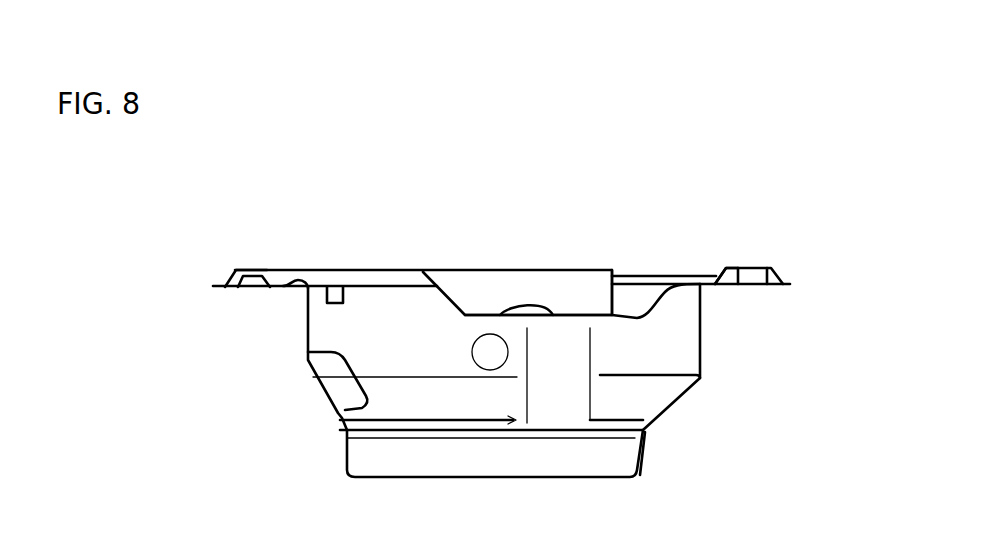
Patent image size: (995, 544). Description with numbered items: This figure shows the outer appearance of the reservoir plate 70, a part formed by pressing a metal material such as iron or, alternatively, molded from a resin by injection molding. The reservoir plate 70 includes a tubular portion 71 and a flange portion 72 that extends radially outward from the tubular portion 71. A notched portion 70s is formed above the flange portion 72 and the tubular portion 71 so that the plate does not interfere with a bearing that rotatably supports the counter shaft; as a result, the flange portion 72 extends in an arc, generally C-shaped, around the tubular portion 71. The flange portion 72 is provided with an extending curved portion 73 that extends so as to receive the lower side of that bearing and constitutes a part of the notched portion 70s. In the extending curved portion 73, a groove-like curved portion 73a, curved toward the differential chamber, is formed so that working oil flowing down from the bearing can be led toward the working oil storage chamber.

The reservoir plate 70 is at (373, 210).
The notched portion 70s is at (577, 298).
The tubular portion 71 is at (347, 328).
The flange portion 72 is at (283, 286).
The extending curved portion 73 is at (772, 268).
The groove-like curved portion 73a is at (733, 268).